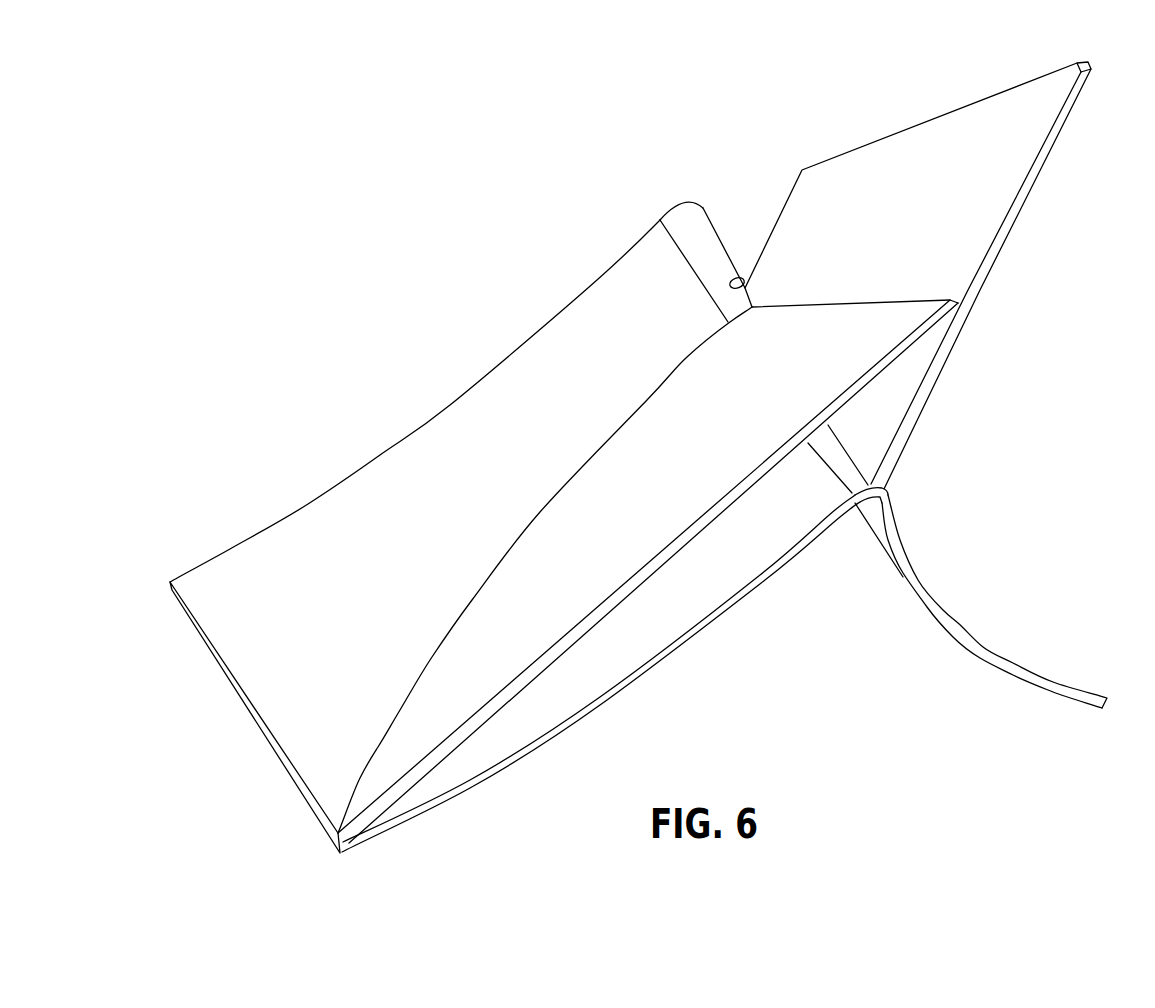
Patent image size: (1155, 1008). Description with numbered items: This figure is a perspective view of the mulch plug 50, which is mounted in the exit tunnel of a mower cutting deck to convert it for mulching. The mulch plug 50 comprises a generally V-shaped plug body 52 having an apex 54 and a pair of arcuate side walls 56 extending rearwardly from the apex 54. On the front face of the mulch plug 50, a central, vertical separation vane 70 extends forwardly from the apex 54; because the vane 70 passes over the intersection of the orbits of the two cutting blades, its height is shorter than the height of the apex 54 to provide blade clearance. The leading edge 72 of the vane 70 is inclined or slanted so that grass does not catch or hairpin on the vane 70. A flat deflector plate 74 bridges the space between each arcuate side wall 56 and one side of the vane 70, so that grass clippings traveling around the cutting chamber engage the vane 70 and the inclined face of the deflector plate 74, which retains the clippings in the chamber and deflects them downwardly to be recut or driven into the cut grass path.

The mulch plug 50 is at (622, 178).
The plug body 52 is at (543, 372).
The apex 54 is at (690, 217).
The arcuate side wall 56 is at (392, 513).
The separation vane 70 is at (940, 245).
The leading edge 72 is at (858, 146).
The deflector plate 74 is at (623, 545).